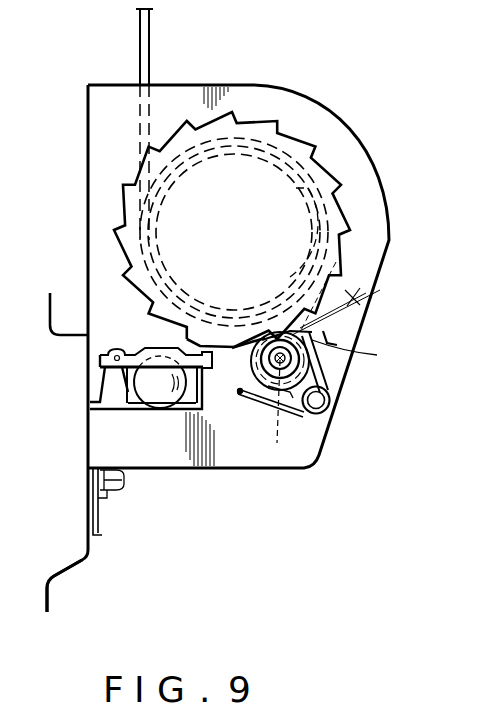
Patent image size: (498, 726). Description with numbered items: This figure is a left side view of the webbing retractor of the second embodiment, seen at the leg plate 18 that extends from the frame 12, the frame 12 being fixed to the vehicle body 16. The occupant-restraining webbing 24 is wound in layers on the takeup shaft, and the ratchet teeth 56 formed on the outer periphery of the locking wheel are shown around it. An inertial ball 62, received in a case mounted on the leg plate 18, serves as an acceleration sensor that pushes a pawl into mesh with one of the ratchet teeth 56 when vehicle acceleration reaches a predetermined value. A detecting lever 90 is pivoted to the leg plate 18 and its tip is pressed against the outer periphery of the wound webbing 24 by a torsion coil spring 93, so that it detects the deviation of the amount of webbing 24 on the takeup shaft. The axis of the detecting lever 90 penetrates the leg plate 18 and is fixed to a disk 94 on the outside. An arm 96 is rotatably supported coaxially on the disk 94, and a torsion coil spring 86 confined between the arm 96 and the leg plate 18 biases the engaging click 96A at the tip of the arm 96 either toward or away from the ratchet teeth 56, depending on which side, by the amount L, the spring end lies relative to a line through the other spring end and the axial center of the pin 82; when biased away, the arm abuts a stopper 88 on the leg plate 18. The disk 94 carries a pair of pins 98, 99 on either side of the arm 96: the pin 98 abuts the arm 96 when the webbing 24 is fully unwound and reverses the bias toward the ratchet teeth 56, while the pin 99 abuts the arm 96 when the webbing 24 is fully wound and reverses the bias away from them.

The frame 12 is at (98, 533).
The vehicle body 16 is at (58, 562).
The leg plate 18 is at (170, 454).
The occupant-restraining webbing 24 is at (152, 52).
The ratchet teeth 56 is at (187, 350).
The inertial ball 62 is at (152, 387).
The pin 82 is at (258, 398).
The torsion coil spring 86 is at (325, 378).
The stopper 88 is at (355, 353).
The detecting lever 90 is at (342, 245).
The torsion coil spring 93 is at (267, 413).
The disk 94 is at (253, 378).
The arm 96 is at (290, 392).
The engaging click 96A is at (315, 338).
The pin 98 is at (332, 395).
The pin 99 is at (252, 345).
The amount L is at (378, 288).